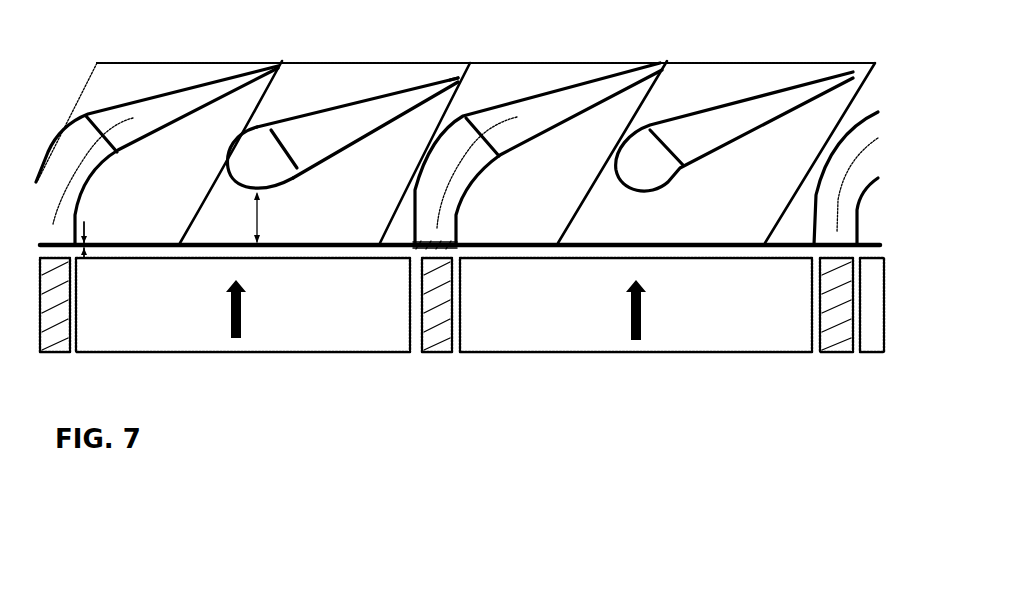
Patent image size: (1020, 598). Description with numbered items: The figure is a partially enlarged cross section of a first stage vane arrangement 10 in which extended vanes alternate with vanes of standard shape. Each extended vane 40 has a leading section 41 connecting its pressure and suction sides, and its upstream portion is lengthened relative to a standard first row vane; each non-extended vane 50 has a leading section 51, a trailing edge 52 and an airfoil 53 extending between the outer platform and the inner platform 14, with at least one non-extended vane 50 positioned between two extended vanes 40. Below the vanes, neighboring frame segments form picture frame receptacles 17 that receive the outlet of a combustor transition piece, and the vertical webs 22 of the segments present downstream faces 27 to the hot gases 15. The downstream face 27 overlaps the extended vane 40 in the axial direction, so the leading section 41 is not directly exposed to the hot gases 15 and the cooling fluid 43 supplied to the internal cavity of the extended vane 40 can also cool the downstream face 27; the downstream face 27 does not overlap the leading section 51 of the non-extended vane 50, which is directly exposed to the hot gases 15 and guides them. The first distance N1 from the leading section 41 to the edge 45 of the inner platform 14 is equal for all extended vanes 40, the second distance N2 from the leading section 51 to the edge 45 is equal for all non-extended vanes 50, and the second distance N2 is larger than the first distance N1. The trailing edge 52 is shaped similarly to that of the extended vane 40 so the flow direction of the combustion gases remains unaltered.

The first stage vane arrangement 10 is at (405, 50).
The inner platform 14 is at (600, 69).
The hot gases 15 is at (451, 310).
The picture frame receptacle 17 is at (527, 310).
The vertical web 22 is at (440, 332).
The downstream face 27 is at (438, 258).
The extended vane 40 is at (154, 105).
The leading section 41 is at (422, 243).
The cooling fluid 43 is at (445, 183).
The edge of the inner platform 45 is at (207, 243).
The non-extended vane 50 is at (501, 110).
The leading section 51 is at (230, 179).
The trailing edge 52 is at (457, 73).
The airfoil 53 is at (328, 153).
The first distance N1 is at (86, 241).
The second distance N2 is at (271, 217).